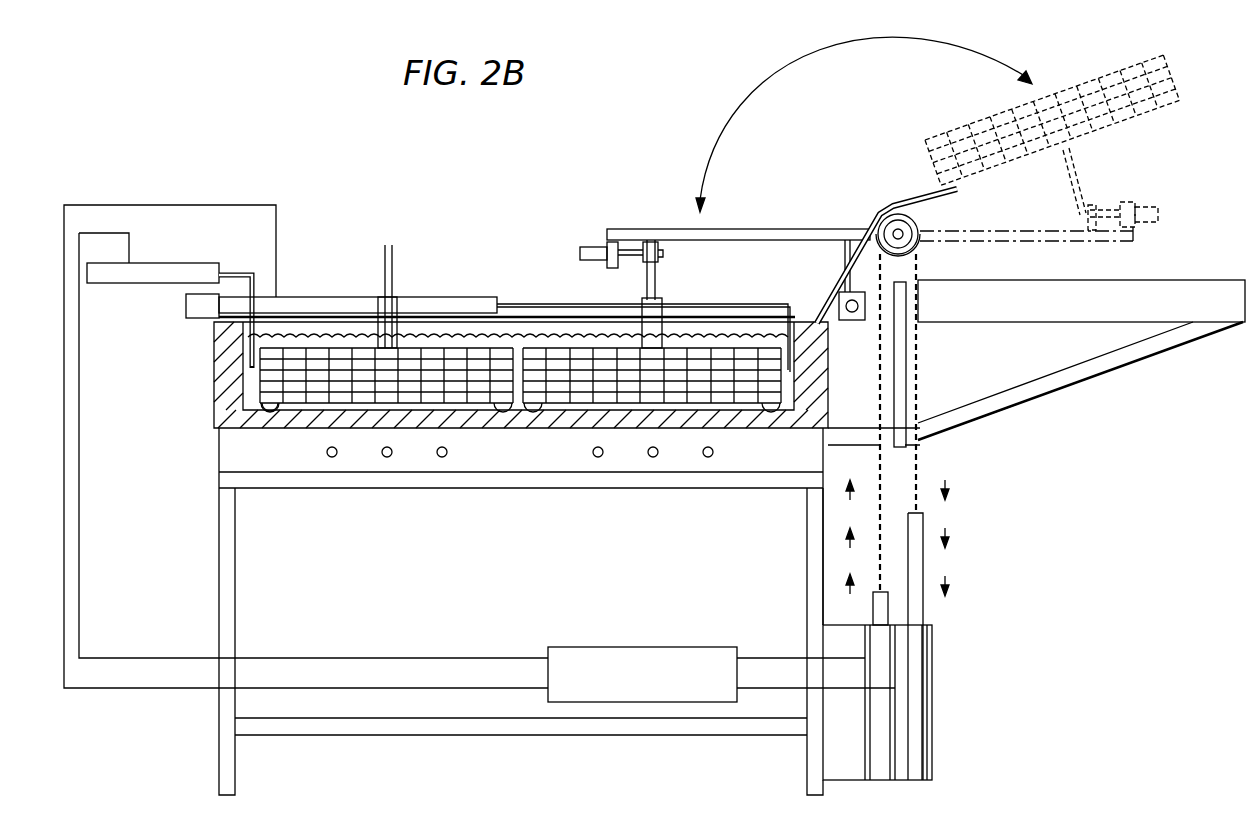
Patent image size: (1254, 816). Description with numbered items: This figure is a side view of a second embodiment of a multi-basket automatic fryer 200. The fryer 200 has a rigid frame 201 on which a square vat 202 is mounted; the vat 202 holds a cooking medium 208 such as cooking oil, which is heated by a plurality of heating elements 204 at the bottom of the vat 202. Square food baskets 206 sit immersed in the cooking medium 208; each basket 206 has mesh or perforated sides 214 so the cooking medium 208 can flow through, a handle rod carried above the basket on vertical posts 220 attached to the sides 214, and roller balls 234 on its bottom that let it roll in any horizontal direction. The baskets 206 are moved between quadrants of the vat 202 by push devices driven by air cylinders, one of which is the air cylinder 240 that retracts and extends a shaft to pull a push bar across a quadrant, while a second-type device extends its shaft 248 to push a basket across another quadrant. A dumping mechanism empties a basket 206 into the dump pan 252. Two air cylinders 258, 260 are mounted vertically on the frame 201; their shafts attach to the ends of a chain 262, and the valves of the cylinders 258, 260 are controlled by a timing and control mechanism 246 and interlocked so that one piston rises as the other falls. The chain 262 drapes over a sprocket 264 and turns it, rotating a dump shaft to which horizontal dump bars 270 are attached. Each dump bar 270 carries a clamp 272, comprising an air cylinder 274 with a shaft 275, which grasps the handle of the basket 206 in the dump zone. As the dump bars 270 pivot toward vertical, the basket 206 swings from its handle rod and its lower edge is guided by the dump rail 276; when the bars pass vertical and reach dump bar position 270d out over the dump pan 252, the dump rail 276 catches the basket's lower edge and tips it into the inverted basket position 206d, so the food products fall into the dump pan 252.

The multi-basket automatic fryer 200 is at (262, 158).
The rigid frame 201 is at (222, 598).
The square vat 202 is at (215, 448).
The heating elements 204 is at (716, 453).
The food basket 206 is at (477, 402).
The basket position 206d is at (1178, 82).
The cooking medium 208 is at (295, 458).
The basket sides 214 is at (258, 374).
The vertical posts 220 is at (396, 265).
The roller balls 234 is at (258, 406).
The air cylinder 240 is at (855, 322).
The timing and control mechanism 246 is at (661, 687).
The shaft 248 is at (222, 268).
The dump pan 252 is at (1203, 280).
The air cylinder 258 is at (882, 660).
The air cylinder 260 is at (917, 726).
The chain 262 is at (918, 344).
The sprocket 264 is at (894, 222).
The dump bar 270 is at (638, 230).
The dump bar position 270d is at (1142, 202).
The clamp 272 is at (662, 255).
The air cylinder 274 is at (590, 247).
The shaft 275 is at (630, 262).
The dump rail 276 is at (960, 194).